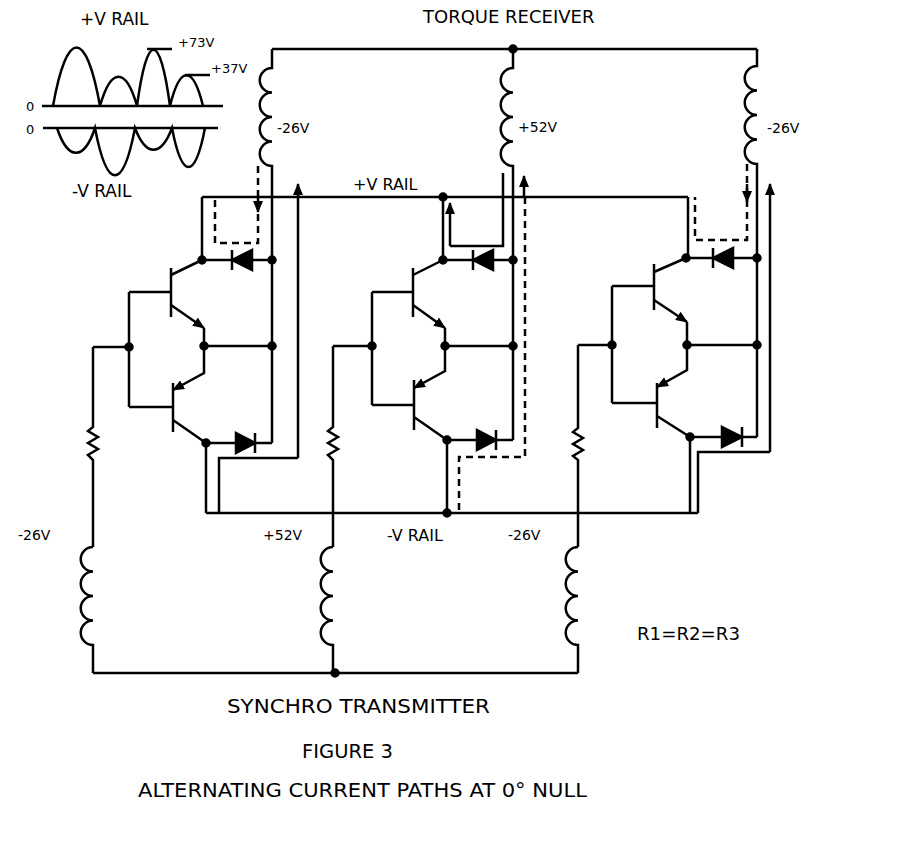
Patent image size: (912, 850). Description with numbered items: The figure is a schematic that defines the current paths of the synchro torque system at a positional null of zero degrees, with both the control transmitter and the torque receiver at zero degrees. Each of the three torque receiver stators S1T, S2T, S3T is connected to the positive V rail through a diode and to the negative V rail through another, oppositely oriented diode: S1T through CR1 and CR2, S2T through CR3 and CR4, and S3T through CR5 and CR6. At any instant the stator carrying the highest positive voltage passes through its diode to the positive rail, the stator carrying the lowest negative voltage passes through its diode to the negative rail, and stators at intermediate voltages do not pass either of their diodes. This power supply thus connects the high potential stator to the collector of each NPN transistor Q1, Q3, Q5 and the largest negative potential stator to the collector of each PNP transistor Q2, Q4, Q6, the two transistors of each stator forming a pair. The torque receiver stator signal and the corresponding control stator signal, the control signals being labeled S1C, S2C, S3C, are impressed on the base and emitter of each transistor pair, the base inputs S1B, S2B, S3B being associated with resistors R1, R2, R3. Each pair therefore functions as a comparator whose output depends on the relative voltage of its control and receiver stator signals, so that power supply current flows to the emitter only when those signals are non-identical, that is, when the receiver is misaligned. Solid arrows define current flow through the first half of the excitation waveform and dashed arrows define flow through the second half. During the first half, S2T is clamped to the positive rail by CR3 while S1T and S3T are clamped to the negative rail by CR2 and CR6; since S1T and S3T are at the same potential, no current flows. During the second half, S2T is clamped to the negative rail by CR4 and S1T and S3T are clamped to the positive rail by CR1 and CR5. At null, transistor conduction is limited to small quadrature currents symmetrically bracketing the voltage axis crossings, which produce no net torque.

The NPN transistor Q1 is at (169, 305).
The PNP transistor Q2 is at (172, 394).
The NPN transistor Q3 is at (412, 305).
The PNP transistor Q4 is at (412, 393).
The NPN transistor Q5 is at (653, 303).
The PNP transistor Q6 is at (654, 391).
The diode CR1 is at (237, 247).
The diode CR2 is at (238, 414).
The diode CR3 is at (478, 233).
The diode CR4 is at (479, 414).
The diode CR5 is at (722, 245).
The diode CR6 is at (722, 413).
The resistor R1 is at (107, 447).
The resistor R2 is at (348, 446).
The resistor R3 is at (594, 446).
The torque receiver stator S1T is at (264, 281).
The torque receiver stator S2T is at (505, 281).
The torque receiver stator S3T is at (749, 281).
The base drive input S1 S1B is at (110, 349).
The base drive input S2 S2B is at (353, 348).
The base drive input S3 S3B is at (593, 344).
The synchro transmitter stator winding S1 S1C is at (108, 610).
The synchro transmitter stator winding S2 S2C is at (350, 610).
The synchro transmitter stator winding S3 S3C is at (595, 610).